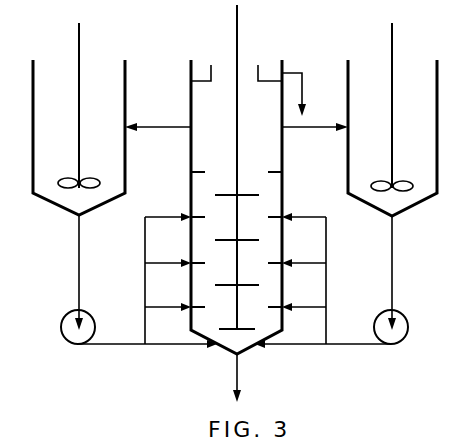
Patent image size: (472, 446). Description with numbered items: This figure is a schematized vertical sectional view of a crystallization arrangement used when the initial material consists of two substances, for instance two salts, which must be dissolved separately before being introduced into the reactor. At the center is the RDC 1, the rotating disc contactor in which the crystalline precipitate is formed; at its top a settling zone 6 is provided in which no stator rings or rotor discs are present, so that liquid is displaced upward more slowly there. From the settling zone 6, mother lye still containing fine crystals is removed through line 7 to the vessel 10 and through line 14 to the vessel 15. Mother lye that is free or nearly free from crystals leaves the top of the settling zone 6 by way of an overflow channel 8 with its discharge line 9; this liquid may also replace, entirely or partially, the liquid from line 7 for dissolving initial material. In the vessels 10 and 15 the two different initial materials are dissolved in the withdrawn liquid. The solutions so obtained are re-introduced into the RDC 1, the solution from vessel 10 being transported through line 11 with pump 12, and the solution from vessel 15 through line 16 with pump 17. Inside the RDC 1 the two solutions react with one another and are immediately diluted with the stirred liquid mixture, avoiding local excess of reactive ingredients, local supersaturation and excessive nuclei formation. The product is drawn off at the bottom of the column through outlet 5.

The RDC 1 is at (234, 207).
The product outlet 5 is at (243, 378).
The settling zone 6 is at (238, 167).
The line 7 is at (315, 137).
The overflow channel 8 is at (236, 61).
The discharge line 9 is at (299, 94).
The vessel 10 is at (392, 119).
The line 11 is at (404, 273).
The pump 12 is at (406, 327).
The line 14 is at (158, 118).
The vessel 15 is at (79, 119).
The line 16 is at (65, 272).
The pump 17 is at (62, 327).